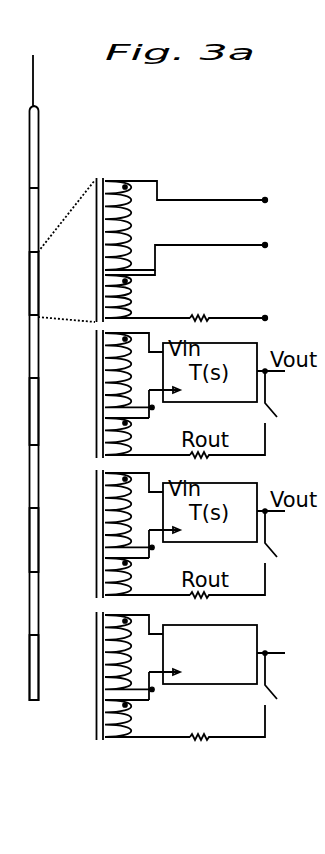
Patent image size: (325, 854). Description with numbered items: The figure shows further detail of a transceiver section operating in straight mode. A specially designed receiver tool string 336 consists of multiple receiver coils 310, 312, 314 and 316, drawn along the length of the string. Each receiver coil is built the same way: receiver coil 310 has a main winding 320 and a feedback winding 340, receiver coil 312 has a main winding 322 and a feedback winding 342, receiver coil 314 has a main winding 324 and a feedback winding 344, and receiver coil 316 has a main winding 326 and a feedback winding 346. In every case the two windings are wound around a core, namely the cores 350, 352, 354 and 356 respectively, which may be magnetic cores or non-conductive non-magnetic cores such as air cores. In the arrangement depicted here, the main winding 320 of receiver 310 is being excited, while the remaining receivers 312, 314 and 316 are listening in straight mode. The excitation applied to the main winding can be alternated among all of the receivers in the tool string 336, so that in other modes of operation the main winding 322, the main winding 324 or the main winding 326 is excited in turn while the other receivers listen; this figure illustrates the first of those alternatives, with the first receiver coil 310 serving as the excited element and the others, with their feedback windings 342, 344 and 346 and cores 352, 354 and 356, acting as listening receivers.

The receiver coil 310 is at (32, 275).
The receiver coil 312 is at (40, 412).
The receiver coil 314 is at (38, 528).
The receiver coil 316 is at (38, 660).
The main winding 320 is at (130, 221).
The main winding 322 is at (103, 362).
The main winding 324 is at (103, 477).
The main winding 326 is at (103, 653).
The receiver tool string 336 is at (183, 718).
The feedback winding 340 is at (130, 301).
The feedback winding 342 is at (103, 432).
The feedback winding 344 is at (103, 552).
The feedback winding 346 is at (103, 712).
The core 350 is at (97, 243).
The core 352 is at (103, 456).
The core 354 is at (100, 590).
The core 356 is at (103, 735).